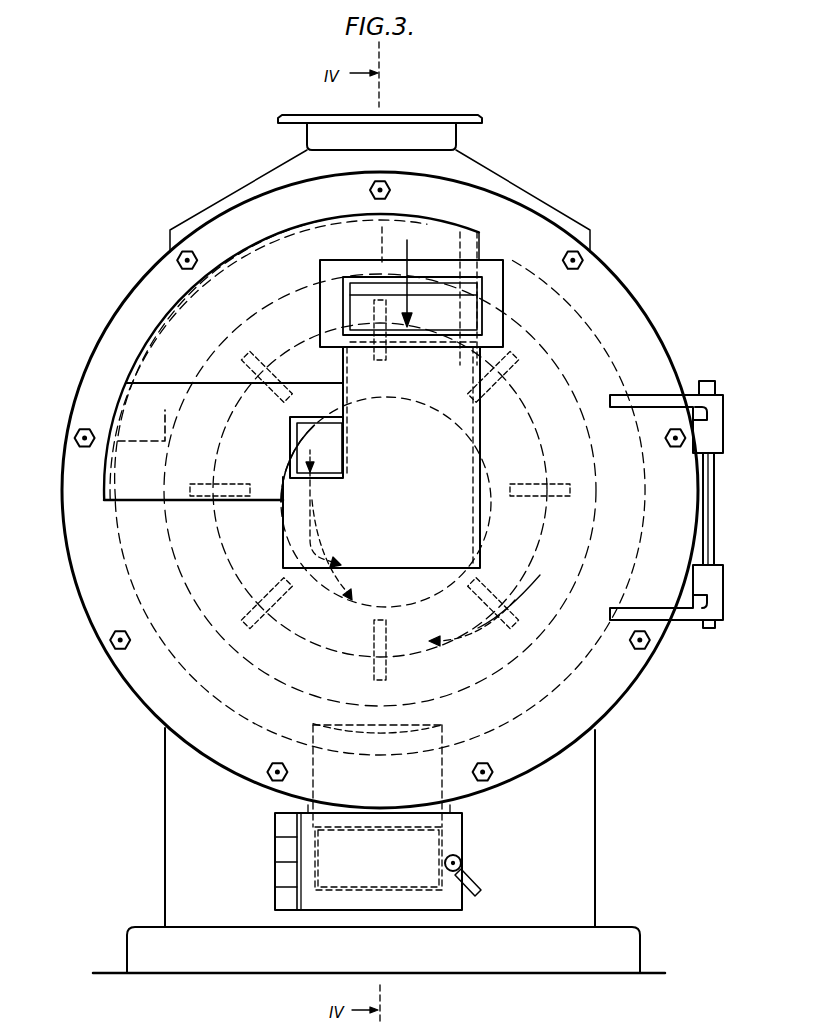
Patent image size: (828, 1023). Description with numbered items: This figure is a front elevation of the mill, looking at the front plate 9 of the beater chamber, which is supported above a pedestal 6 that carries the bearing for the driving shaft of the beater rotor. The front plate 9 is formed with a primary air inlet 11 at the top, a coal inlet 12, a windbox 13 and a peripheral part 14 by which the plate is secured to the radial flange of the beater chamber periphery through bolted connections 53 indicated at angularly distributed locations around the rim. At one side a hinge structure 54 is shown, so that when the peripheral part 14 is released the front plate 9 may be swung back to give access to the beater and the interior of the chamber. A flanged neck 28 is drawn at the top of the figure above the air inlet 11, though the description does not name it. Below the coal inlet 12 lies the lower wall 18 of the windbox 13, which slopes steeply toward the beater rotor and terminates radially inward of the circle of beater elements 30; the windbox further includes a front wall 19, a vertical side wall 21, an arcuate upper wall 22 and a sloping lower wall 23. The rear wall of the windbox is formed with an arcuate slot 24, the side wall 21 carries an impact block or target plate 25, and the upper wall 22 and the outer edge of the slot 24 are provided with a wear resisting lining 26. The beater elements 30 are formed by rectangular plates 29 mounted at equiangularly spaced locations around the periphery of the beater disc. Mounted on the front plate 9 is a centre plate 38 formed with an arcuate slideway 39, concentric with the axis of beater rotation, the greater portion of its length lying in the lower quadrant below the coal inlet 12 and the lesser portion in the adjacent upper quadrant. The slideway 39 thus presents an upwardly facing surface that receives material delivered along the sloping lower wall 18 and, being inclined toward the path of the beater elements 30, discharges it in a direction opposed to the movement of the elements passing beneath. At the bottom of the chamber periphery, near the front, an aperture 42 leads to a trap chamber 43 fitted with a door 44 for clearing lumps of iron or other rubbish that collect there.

The pedestal 6 is at (572, 893).
The front plate 9 is at (593, 585).
The primary air inlet 11 is at (467, 303).
The coal inlet 12 is at (325, 447).
The windbox 13 is at (197, 283).
The peripheral part 14 is at (597, 695).
The lower wall 18 is at (397, 532).
The front wall 19 is at (288, 305).
The vertical side wall 21 is at (565, 226).
The arcuate upper wall 22 is at (173, 305).
The sloping lower wall 23 is at (142, 487).
The arcuate slot 24 is at (117, 347).
The impact block 25 is at (535, 213).
The wear resisting lining 26 is at (107, 393).
The inlet neck flange 28 is at (306, 142).
The rectangular plates 29 is at (460, 696).
The beater elements 30 is at (547, 420).
The centre plate 38 is at (361, 623).
The arcuate slideway 39 is at (228, 587).
The aperture 42 is at (430, 750).
The trap chamber 43 is at (450, 808).
The door 44 is at (392, 870).
The bolted connections 53 is at (394, 194).
The hinge structure 54 is at (709, 381).